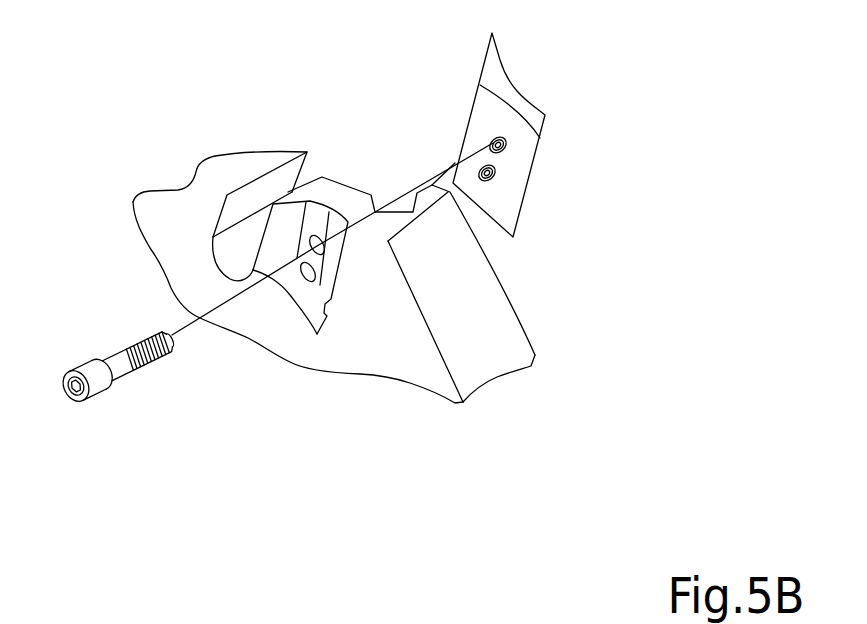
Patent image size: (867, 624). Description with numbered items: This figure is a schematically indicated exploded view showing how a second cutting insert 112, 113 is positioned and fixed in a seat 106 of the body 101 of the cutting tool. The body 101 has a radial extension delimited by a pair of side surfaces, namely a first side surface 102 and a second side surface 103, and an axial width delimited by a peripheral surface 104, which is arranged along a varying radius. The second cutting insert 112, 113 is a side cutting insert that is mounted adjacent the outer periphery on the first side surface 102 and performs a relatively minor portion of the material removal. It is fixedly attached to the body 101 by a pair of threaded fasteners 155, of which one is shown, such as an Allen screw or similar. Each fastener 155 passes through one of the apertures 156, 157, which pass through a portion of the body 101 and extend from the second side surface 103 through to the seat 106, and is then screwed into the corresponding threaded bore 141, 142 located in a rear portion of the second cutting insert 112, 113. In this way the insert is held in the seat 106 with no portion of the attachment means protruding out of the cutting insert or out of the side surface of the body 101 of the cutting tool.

The body 101 is at (381, 355).
The first side surface 102 is at (516, 294).
The second side surface 103 is at (326, 357).
The peripheral surface 104 is at (490, 358).
The seat 106 is at (338, 162).
The second cutting insert 112 is at (500, 86).
The second cutting insert 113 is at (510, 111).
The threaded bore 141 is at (508, 152).
The threaded bore 142 is at (495, 183).
The threaded fastener 155 is at (112, 365).
The aperture 156 is at (318, 241).
The aperture 157 is at (313, 284).